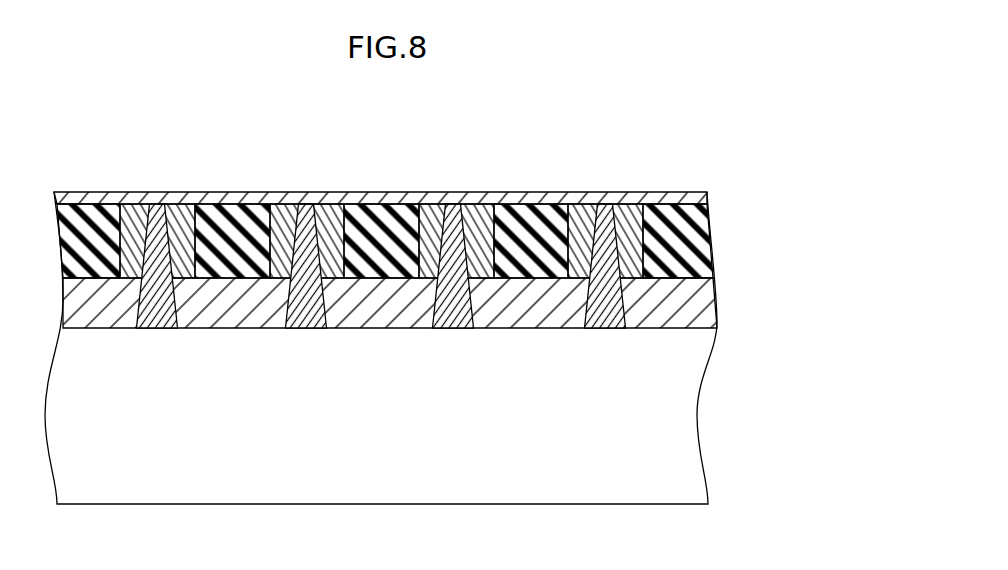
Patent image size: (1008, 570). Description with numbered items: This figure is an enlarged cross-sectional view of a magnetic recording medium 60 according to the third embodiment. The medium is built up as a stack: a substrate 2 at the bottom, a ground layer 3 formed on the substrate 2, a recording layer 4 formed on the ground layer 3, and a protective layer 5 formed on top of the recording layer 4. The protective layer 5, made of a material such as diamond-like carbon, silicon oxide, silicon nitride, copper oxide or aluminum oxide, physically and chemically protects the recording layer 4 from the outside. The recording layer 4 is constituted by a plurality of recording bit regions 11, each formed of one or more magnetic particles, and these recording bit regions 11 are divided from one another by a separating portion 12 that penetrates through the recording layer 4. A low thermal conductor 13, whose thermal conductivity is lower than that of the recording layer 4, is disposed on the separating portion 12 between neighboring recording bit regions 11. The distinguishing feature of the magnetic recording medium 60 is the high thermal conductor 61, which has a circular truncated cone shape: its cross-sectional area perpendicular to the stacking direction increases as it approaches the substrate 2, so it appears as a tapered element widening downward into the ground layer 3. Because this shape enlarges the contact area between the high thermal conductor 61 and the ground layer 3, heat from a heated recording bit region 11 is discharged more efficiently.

The substrate 2 is at (688, 417).
The ground layer 3 is at (713, 298).
The recording layer 4 is at (330, 207).
The protective layer 5 is at (682, 198).
The recording bit region 11 is at (412, 203).
The separating portion 12 is at (703, 237).
The low thermal conductor 13 is at (452, 241).
The magnetic recording medium 60 is at (807, 172).
The high thermal conductor 61 is at (305, 207).